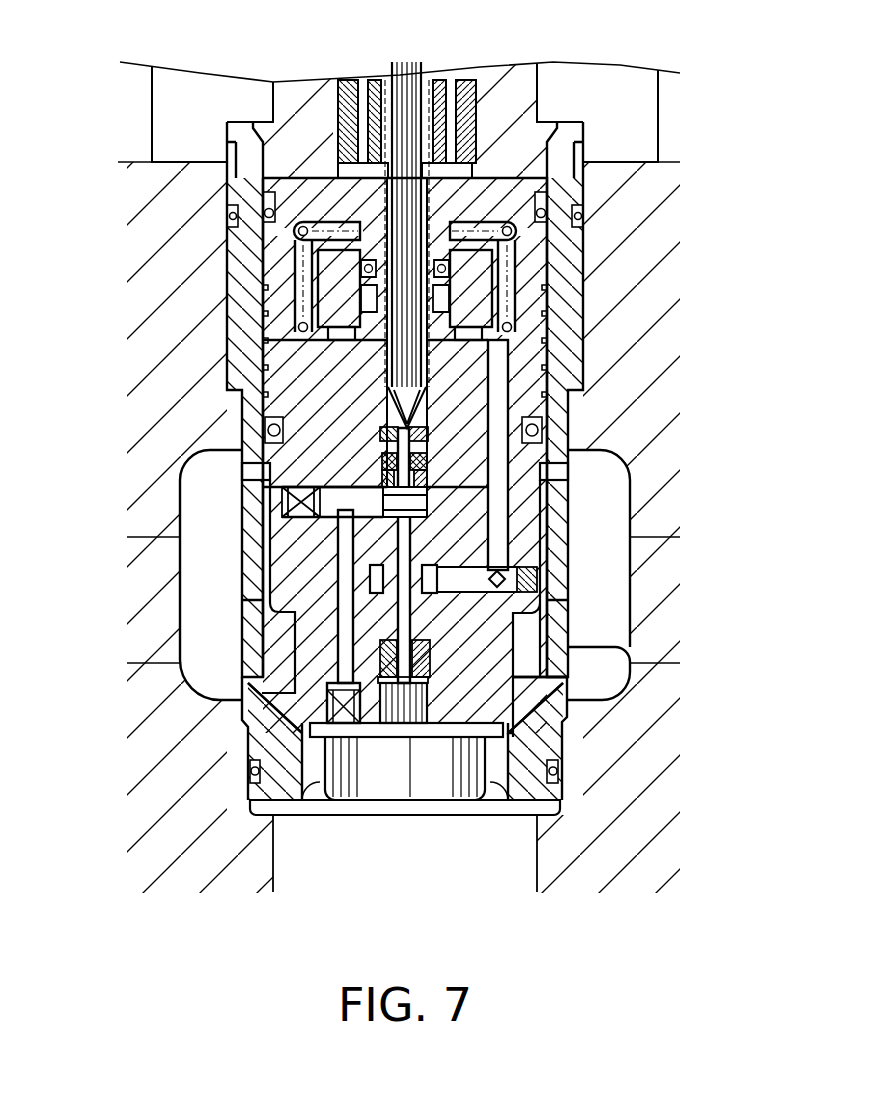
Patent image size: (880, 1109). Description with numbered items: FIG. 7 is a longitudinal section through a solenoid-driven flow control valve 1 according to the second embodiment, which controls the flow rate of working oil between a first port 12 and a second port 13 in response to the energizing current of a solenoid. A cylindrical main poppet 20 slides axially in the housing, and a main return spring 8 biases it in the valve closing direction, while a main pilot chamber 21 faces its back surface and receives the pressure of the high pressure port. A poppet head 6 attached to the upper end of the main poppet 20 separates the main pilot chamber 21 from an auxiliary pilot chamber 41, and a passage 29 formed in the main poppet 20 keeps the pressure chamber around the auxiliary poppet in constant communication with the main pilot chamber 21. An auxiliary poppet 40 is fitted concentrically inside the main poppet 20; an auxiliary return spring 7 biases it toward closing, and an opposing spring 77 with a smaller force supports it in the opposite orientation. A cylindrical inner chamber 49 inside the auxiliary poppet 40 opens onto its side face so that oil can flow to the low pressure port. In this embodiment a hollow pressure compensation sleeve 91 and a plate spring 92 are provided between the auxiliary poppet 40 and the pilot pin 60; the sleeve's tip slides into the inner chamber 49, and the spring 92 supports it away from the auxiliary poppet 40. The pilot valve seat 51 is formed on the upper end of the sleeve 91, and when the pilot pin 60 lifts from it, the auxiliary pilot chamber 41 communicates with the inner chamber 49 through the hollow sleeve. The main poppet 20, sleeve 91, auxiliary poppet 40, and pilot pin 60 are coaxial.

The solenoid-driven flow control valve 1 is at (683, 128).
The pilot pin 60 is at (405, 95).
The main pilot chamber 21 is at (240, 245).
The auxiliary return spring 7 is at (372, 348).
The poppet head 6 is at (462, 273).
The main return spring 8 is at (510, 248).
The passage 29 is at (498, 353).
The auxiliary pilot chamber 41 is at (415, 412).
The pilot valve seat 51 is at (428, 410).
The pressure compensation sleeve 91 is at (385, 430).
The spring 92 is at (392, 490).
The auxiliary poppet 40 is at (400, 557).
The inner chamber 49 is at (382, 543).
The opposing spring 77 is at (338, 665).
The main poppet 20 is at (290, 692).
The second port 13 is at (560, 660).
The first port 12 is at (485, 815).